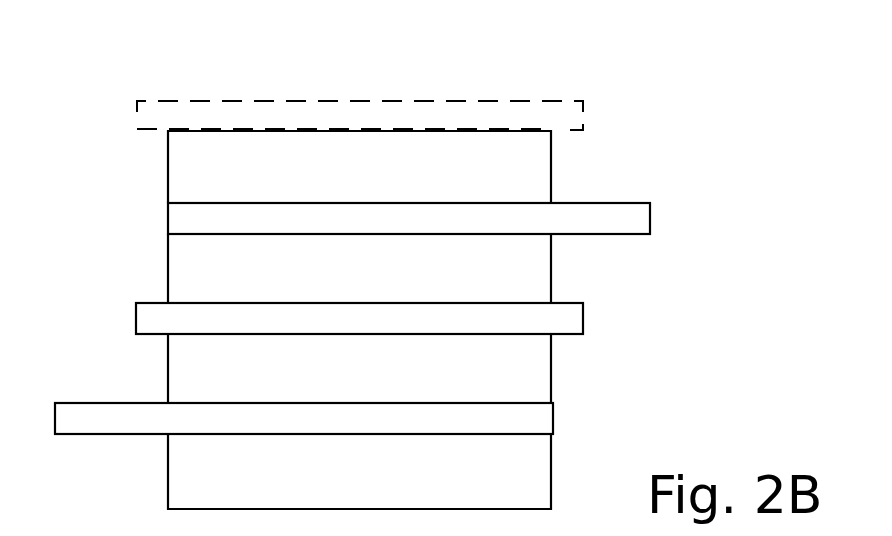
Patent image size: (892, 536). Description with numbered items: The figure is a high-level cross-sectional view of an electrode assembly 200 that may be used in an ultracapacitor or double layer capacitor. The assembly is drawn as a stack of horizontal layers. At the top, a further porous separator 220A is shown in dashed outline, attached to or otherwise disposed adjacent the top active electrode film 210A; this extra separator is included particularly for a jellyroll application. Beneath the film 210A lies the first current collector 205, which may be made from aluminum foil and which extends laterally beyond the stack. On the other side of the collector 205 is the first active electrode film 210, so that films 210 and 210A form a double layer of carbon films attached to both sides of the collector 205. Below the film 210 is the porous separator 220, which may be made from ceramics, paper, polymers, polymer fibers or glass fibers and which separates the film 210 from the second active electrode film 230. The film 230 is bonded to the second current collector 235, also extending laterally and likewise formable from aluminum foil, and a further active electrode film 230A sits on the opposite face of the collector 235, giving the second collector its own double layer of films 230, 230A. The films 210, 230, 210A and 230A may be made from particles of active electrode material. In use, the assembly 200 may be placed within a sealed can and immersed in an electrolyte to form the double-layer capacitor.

The electrode assembly 200 is at (160, 80).
The further porous separator 220A is at (276, 124).
The active electrode film 210A is at (336, 180).
The first current collector 205 is at (378, 227).
The first active electrode film 210 is at (378, 279).
The porous separator 220 is at (377, 327).
The second active electrode film 230 is at (377, 371).
The second current collector 235 is at (377, 425).
The active electrode film 230A is at (467, 481).